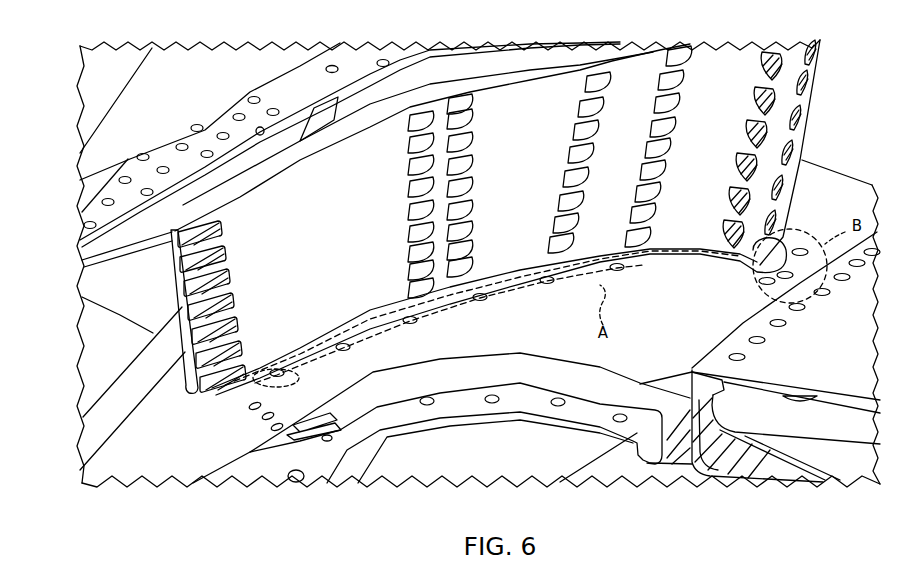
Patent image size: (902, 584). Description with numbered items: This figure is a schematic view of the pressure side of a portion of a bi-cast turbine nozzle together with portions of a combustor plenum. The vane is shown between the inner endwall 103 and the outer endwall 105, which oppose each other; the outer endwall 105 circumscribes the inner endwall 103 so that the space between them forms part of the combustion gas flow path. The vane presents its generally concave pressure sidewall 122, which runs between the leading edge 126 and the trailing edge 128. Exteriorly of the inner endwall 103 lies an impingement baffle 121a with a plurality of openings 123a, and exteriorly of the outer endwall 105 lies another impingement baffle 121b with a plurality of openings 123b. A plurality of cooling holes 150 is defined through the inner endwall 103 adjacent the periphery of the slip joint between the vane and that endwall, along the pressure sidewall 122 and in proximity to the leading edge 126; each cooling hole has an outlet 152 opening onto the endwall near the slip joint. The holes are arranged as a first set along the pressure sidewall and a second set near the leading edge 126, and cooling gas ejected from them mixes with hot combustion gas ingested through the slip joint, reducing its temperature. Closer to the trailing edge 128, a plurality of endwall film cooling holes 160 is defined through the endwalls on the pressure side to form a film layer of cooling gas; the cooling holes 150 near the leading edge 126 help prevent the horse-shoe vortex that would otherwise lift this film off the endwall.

The outer endwall 105 is at (173, 65).
The openings 123b is at (331, 65).
The impingement baffle 121b is at (400, 54).
The pressure sidewall 122 is at (725, 53).
The leading edge 126 is at (812, 96).
The inner endwall 103 is at (856, 188).
The cooling holes 150 is at (278, 377).
The outlet 152 is at (635, 266).
The trailing edge 128 is at (176, 282).
The endwall film cooling holes 160 is at (251, 418).
The impingement baffle 121a is at (571, 417).
The openings 123a is at (492, 406).